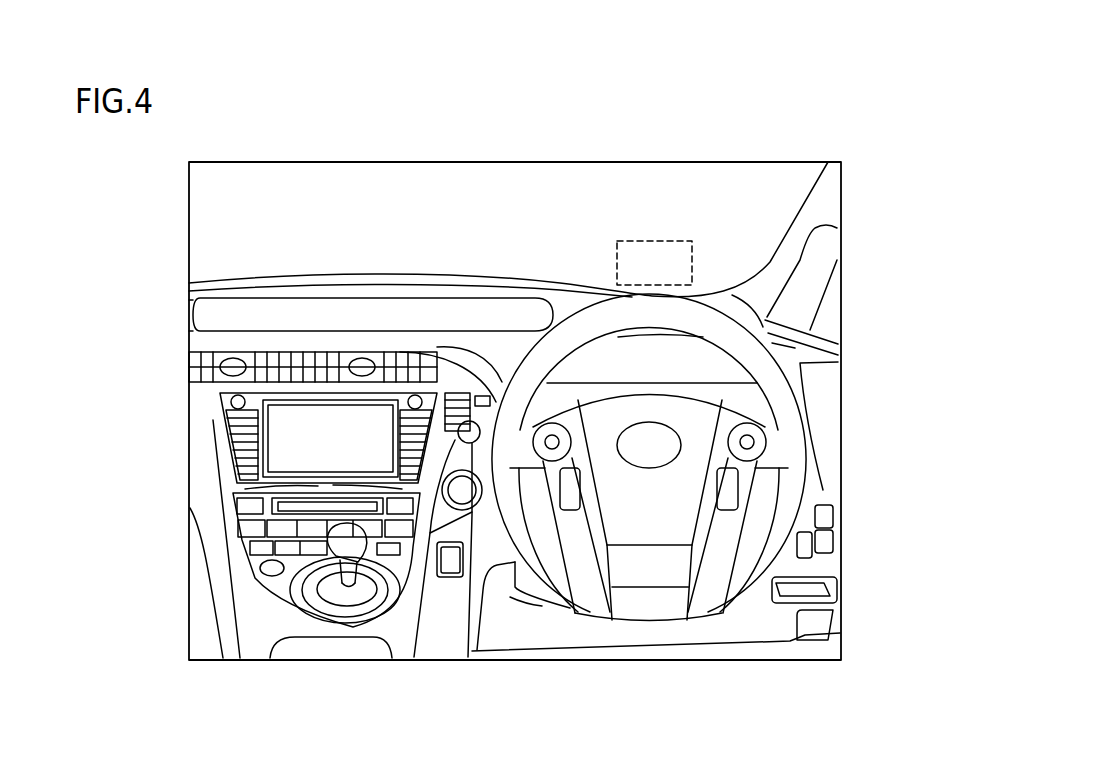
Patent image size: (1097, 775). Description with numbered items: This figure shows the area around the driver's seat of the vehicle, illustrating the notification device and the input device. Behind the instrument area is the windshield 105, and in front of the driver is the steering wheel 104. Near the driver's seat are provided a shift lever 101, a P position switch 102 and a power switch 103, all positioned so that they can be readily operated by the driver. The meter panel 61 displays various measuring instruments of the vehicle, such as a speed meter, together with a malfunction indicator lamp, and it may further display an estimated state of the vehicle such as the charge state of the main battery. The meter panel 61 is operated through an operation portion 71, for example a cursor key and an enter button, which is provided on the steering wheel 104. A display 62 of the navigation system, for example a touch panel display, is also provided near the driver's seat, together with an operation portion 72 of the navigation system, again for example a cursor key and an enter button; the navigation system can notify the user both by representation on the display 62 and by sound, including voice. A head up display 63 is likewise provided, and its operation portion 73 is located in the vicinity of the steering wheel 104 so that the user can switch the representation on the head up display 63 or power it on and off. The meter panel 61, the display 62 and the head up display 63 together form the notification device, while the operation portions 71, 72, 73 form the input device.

The windshield 105 is at (210, 210).
The meter panel 61 is at (230, 315).
The display 62 is at (283, 433).
The operation portion 72 is at (228, 452).
The operation portion 73 is at (457, 386).
The head up display 63 is at (667, 238).
The steering wheel 104 is at (778, 373).
The operation portion 71 is at (768, 440).
The shift lever 101 is at (345, 577).
The P position switch 102 is at (388, 556).
The power switch 103 is at (469, 511).